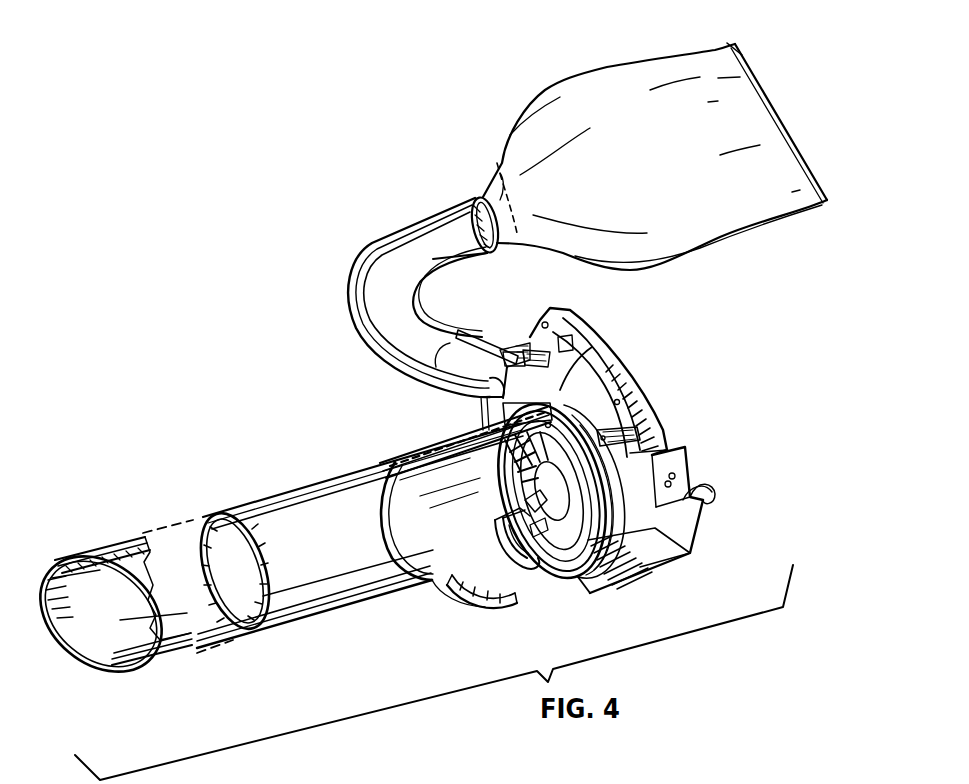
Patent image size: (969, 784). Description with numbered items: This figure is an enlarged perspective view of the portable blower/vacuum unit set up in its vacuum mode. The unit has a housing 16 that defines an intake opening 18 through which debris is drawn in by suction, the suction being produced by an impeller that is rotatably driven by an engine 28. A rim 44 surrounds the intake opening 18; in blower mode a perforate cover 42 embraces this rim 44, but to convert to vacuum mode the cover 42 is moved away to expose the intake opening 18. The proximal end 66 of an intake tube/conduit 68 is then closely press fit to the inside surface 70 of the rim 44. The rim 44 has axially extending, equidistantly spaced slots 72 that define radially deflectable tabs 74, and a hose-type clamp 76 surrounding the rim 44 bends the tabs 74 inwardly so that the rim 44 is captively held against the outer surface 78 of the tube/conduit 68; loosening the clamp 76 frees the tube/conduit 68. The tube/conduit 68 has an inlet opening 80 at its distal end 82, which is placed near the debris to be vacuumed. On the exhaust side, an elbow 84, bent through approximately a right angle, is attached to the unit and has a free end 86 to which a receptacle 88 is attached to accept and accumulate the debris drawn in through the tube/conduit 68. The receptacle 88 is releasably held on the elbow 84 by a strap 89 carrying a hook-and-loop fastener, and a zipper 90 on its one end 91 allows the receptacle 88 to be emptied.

The housing 16 is at (560, 393).
The intake opening 18 is at (450, 450).
The engine 28 is at (613, 393).
The perforate cover 42 is at (473, 600).
The rim 44 is at (530, 505).
The proximal end 66 is at (489, 425).
The intake tube/conduit 68 is at (283, 500).
The inside surface 70 is at (540, 577).
The slots 72 is at (515, 520).
The tabs 74 is at (613, 530).
The hose-type clamp 76 is at (545, 522).
The outer surface 78 is at (337, 613).
The inlet opening 80 is at (47, 566).
The distal end 82 is at (158, 600).
The elbow 84 is at (348, 280).
The free end 86 is at (490, 155).
The receptacle 88 is at (660, 170).
The strap 89 is at (482, 197).
The zipper 90 is at (770, 106).
The one end 91 is at (722, 73).